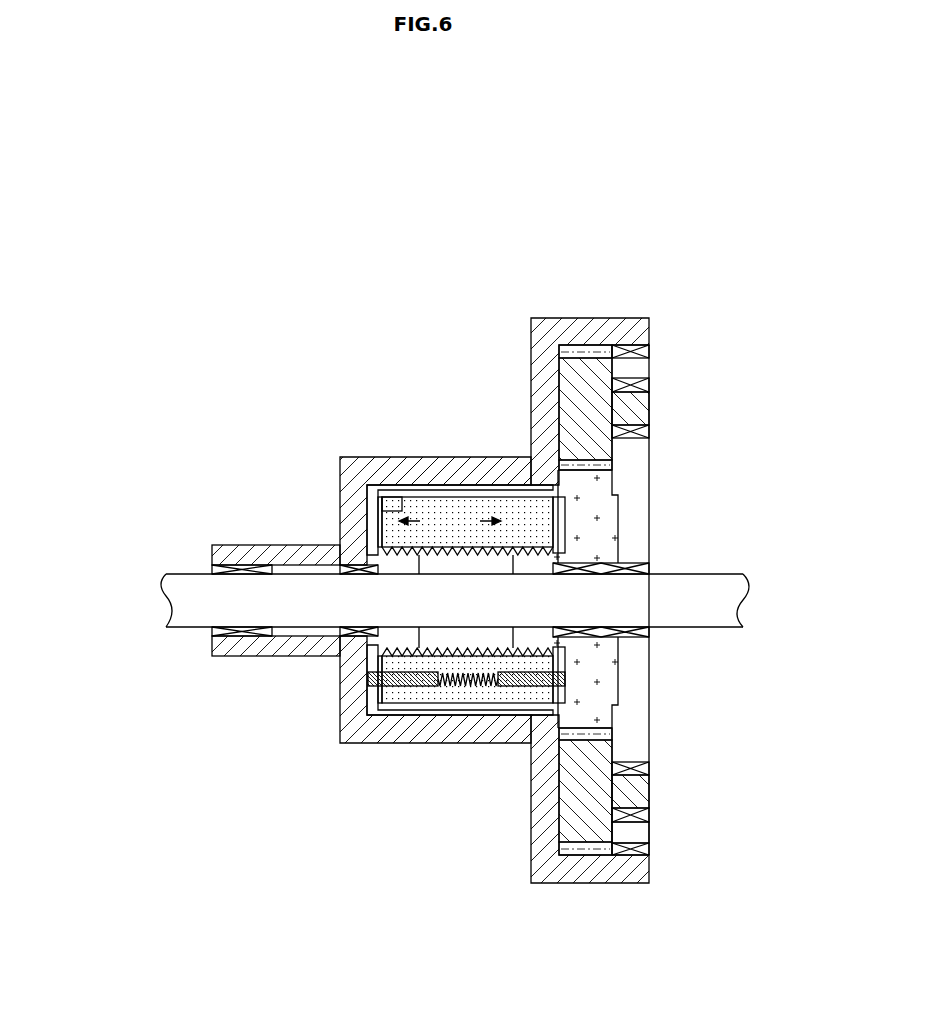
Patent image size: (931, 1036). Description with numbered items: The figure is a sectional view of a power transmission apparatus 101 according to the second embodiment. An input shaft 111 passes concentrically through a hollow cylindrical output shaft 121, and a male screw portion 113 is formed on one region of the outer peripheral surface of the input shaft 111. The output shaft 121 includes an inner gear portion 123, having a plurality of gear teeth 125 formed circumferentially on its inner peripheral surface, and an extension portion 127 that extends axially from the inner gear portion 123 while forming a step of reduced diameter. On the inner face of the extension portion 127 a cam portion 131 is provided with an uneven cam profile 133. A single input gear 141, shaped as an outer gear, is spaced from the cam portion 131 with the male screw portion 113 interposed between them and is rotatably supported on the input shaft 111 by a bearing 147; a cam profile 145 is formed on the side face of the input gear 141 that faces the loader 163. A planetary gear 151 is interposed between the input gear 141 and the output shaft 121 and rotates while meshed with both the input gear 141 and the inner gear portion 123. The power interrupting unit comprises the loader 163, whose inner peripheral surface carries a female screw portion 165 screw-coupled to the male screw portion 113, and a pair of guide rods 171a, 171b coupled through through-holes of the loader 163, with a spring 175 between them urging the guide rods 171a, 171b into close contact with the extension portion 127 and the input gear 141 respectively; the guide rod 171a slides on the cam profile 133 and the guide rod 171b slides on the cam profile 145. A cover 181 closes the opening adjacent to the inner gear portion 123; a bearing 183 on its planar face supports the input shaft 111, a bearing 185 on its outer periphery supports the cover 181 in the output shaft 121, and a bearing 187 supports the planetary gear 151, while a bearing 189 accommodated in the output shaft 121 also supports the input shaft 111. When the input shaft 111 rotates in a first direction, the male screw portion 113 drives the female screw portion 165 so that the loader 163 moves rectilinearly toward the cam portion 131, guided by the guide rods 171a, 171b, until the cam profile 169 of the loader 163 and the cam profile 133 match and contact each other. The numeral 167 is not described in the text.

The power transmission apparatus 101 is at (422, 556).
The input shaft 111 is at (392, 600).
The male screw portion 113 is at (467, 523).
The output shaft 121 is at (508, 441).
The inner gear portion 123 is at (590, 342).
The gear teeth 125 is at (590, 843).
The extension portion 127 is at (449, 471).
The cam portion 131 is at (342, 600).
The cam profile 133 is at (343, 573).
The input gear 141 is at (671, 516).
The cam profile 145 is at (652, 683).
The bearing 147 is at (654, 552).
The planetary gear 151 is at (670, 600).
The loader 163 is at (378, 430).
The female screw portion 165 is at (467, 515).
The plate assembly 167 is at (443, 770).
The cam profile 169 is at (450, 584).
The guide rod 171a is at (380, 770).
The guide rod 171b is at (520, 766).
The spring 175 is at (468, 760).
The cover 181 is at (681, 809).
The bearing 183 is at (654, 642).
The bearing 185 is at (696, 329).
The bearing 187 is at (710, 404).
The bearing 189 is at (252, 647).